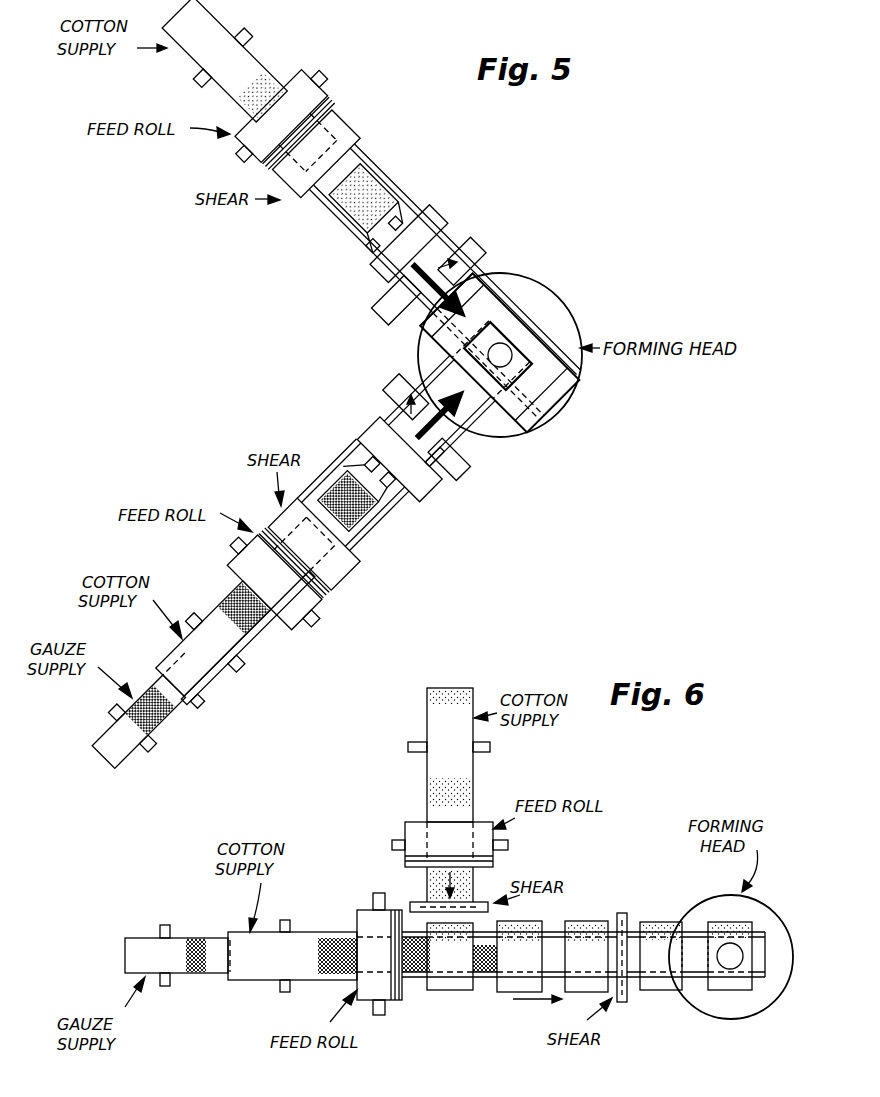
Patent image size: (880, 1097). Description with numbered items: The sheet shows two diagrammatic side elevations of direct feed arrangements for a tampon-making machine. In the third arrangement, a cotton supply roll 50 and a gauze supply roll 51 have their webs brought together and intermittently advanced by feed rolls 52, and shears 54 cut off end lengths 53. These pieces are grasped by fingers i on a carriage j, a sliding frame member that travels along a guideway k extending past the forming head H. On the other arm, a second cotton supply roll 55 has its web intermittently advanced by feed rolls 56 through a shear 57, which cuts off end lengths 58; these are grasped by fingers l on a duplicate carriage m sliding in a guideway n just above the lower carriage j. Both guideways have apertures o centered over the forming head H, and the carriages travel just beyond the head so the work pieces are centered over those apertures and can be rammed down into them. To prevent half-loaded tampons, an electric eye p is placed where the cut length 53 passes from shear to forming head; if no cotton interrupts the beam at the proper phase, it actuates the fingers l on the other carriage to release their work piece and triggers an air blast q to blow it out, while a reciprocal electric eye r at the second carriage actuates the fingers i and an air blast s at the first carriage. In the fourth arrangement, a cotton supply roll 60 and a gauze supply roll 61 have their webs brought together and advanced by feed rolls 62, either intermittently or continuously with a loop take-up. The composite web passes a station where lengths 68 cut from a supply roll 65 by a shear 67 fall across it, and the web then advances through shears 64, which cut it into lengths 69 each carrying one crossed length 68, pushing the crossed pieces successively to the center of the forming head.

In FIG. 5, the cotton supply roll 50 is at (207, 688).
In FIG. 5, the gauze supply roll 51 is at (113, 752).
In FIG. 5, the feed rolls 52 is at (284, 625).
In FIG. 5, the end lengths 53 is at (362, 520).
In FIG. 5, the shears 54 is at (340, 573).
In FIG. 5, the cotton supply roll 55 is at (238, 72).
In FIG. 5, the feed rolls 56 is at (320, 108).
In FIG. 5, the shear 57 is at (348, 133).
In FIG. 5, the end lengths 58 is at (363, 190).
In FIG. 6, the cotton supply roll 60 is at (307, 930).
In FIG. 6, the gauze supply roll 61 is at (137, 957).
In FIG. 6, the feed rolls 62 is at (403, 992).
In FIG. 6, the shears 64 is at (625, 1000).
In FIG. 6, the supply roll 65 is at (448, 693).
In FIG. 6, the shear 67 is at (418, 902).
In FIG. 6, the lengths 68 is at (448, 983).
In FIG. 6, the lengths 69 is at (630, 932).
In FIG. 5, the forming head H is at (557, 305).
In FIG. 5, the fingers i is at (380, 484).
In FIG. 5, the carriage j is at (372, 433).
In FIG. 5, the guideway k is at (473, 453).
In FIG. 5, the fingers l is at (380, 231).
In FIG. 5, the carriage m is at (427, 228).
In FIG. 5, the guideway n is at (475, 293).
In FIG. 5, the apertures o is at (509, 364).
In FIG. 5, the electric eye p is at (463, 478).
In FIG. 5, the air blast q is at (473, 247).
In FIG. 5, the electric eye r is at (390, 307).
In FIG. 5, the air blast s is at (395, 380).